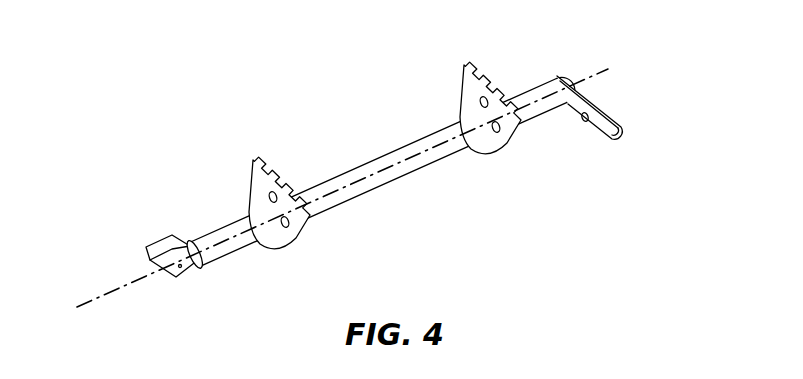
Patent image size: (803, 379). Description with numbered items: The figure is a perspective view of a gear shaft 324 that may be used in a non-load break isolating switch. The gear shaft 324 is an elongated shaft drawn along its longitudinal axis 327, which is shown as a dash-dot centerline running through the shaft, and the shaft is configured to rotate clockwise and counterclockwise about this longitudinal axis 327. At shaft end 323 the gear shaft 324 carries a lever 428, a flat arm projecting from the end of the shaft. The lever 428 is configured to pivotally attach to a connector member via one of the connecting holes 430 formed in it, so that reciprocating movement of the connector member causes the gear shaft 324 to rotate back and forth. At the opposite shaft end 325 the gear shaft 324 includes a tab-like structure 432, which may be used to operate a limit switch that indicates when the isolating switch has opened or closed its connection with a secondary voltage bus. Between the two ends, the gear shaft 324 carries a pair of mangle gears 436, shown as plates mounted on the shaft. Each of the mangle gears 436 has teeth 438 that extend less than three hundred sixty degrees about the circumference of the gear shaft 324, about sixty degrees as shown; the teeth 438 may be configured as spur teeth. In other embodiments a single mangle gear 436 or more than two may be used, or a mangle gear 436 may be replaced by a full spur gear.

The shaft end 323 is at (594, 61).
The gear shaft 324 is at (327, 74).
The opposite shaft end 325 is at (134, 261).
The longitudinal axis 327 is at (422, 152).
The lever 428 is at (626, 148).
The connecting holes 430 is at (584, 122).
The tab-like structure 432 is at (150, 238).
The mangle gears 436 is at (300, 242).
The teeth 438 is at (290, 182).